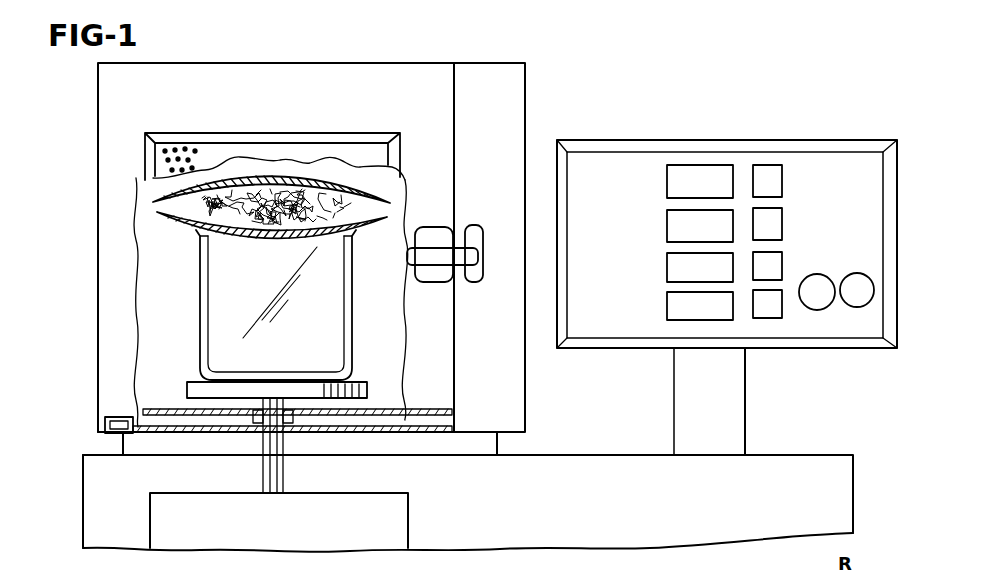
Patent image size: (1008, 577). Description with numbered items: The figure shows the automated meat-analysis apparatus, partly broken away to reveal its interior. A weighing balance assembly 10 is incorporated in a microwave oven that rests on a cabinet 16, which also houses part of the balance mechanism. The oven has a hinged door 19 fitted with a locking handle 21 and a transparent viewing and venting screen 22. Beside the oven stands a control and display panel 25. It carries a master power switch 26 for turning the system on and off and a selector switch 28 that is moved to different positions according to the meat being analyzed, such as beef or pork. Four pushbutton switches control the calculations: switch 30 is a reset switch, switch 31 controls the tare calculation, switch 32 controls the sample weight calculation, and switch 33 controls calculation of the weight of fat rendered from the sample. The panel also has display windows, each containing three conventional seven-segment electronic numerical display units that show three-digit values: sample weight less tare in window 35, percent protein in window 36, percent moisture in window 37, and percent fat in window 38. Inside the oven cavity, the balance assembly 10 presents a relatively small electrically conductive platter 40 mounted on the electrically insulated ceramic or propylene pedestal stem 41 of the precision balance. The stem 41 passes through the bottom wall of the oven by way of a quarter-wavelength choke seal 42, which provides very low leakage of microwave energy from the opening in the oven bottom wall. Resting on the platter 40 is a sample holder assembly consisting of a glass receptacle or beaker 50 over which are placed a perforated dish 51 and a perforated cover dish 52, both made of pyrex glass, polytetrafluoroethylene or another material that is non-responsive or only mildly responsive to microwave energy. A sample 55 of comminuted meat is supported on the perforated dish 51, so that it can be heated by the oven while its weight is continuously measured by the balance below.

The weighing balance assembly 10 is at (287, 533).
The cabinet 16 is at (587, 516).
The hinged door 19 is at (336, 77).
The locking handle 21 is at (440, 287).
The transparent viewing and venting screen 22 is at (157, 153).
The control and display panel 25 is at (750, 352).
The master power switch 26 is at (857, 300).
The selector switch 28 is at (818, 300).
The reset switch 30 is at (768, 172).
The tare switch 31 is at (777, 227).
The sample weight switch 32 is at (773, 263).
The fat weight switch 33 is at (772, 316).
The sample weight display window 35 is at (695, 172).
The percent protein display window 36 is at (733, 212).
The percent moisture display window 37 is at (668, 255).
The percent fat display window 38 is at (675, 317).
The platter 40 is at (367, 390).
The pedestal stem 41 is at (263, 400).
The choke seal 42 is at (292, 415).
The beaker 50 is at (200, 303).
The perforated dish 51 is at (270, 240).
The perforated cover dish 52 is at (280, 176).
The sample 55 is at (183, 203).